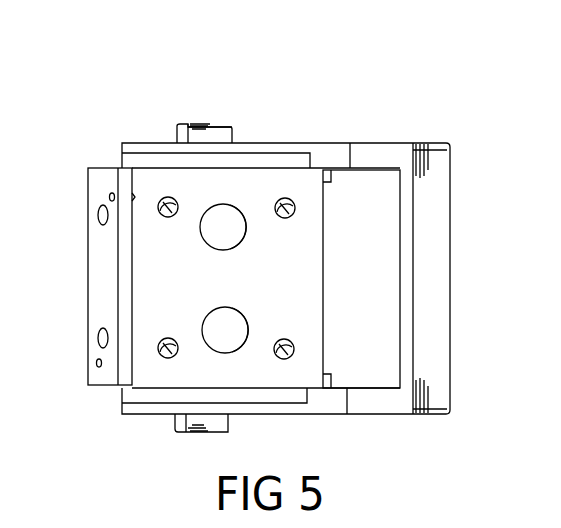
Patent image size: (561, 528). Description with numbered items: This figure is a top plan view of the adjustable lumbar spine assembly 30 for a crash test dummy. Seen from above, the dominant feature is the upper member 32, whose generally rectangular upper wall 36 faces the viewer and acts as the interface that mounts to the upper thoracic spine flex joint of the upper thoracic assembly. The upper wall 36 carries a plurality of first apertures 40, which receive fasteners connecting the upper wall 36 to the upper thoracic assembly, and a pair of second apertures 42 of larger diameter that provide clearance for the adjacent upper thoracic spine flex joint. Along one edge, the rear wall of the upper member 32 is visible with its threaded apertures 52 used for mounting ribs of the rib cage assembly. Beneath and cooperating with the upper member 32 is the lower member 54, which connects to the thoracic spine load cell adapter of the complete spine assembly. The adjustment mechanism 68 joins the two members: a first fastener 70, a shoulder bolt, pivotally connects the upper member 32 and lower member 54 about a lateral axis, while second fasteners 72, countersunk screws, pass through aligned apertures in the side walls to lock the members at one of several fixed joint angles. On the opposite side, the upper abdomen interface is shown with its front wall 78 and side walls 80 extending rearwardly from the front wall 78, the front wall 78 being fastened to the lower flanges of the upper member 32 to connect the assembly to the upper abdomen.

The adjustable lumbar spine assembly 30 is at (357, 82).
The upper member 32 is at (100, 166).
The upper wall 36 is at (234, 182).
The first apertures 40 is at (285, 198).
The second apertures 42 is at (243, 222).
The apertures 52 is at (102, 214).
The lower member 54 is at (412, 143).
The adjustment mechanism 68 is at (232, 133).
The first fastener 70 is at (194, 123).
The second fasteners 72 is at (176, 128).
The front wall 78 is at (430, 278).
The side walls 80 is at (375, 400).